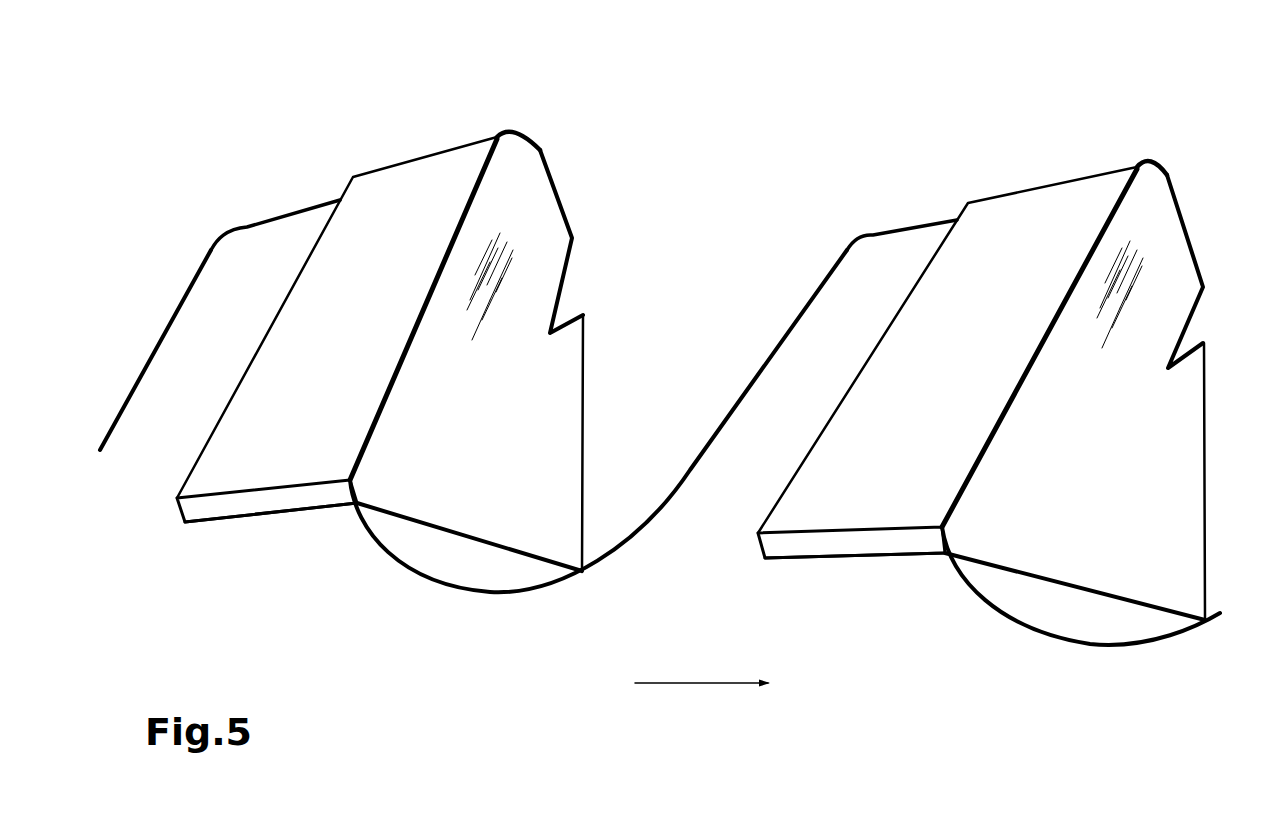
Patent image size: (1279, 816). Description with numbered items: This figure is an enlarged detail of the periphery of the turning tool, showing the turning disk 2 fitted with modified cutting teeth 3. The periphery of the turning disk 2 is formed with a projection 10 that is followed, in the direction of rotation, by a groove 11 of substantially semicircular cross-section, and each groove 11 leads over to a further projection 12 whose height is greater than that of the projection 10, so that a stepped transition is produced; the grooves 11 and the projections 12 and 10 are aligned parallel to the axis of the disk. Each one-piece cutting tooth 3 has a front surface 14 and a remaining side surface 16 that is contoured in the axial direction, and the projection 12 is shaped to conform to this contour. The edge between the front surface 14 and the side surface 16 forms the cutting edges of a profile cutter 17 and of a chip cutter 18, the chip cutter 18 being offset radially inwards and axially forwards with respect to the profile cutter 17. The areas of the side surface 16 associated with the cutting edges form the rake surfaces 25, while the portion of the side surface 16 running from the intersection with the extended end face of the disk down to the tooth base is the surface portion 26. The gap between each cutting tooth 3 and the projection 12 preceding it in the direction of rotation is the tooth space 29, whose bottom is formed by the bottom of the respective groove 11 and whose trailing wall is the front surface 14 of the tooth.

The turning disk 2 is at (547, 688).
The cutting tooth 3 is at (428, 193).
The projection 10 is at (297, 517).
The groove 11 is at (460, 558).
The further projection 12 is at (287, 235).
The front surface 14 is at (507, 415).
The side surface 16 is at (375, 332).
The profile cutter 17 is at (543, 152).
The chip cutter 18 is at (593, 343).
The rake surfaces 25 is at (557, 316).
The portion of surface 26 is at (878, 554).
The tooth space 29 is at (128, 298).